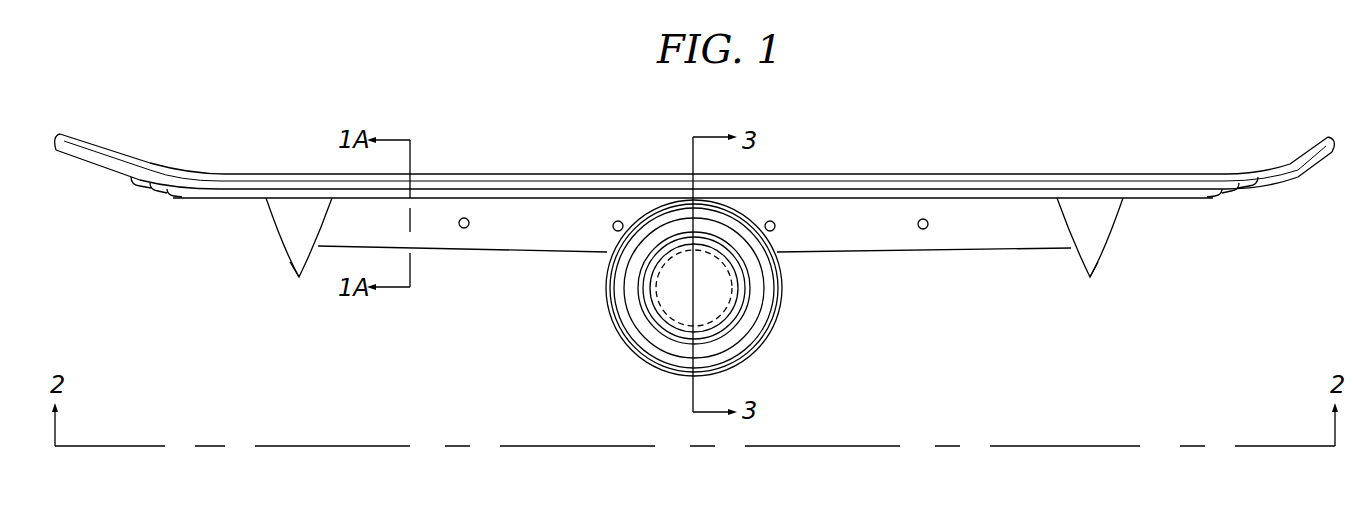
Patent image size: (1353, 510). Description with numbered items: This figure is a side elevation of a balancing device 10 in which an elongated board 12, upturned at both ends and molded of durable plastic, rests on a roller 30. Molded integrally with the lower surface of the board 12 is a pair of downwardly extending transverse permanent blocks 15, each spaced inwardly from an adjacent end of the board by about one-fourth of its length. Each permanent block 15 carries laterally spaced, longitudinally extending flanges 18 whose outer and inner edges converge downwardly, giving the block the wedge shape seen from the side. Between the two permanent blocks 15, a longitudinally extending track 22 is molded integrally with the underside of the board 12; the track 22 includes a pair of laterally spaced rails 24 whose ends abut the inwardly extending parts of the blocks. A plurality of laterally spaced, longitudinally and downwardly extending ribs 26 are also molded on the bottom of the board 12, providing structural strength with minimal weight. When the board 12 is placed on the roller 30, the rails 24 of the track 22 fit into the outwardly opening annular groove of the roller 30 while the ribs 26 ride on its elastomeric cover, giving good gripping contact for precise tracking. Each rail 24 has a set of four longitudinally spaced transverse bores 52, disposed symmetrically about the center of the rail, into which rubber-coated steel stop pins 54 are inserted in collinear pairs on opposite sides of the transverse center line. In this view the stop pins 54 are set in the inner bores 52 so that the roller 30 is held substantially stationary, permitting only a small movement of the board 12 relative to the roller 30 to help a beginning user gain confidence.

The balancing device 10 is at (1080, 103).
The board 12 is at (548, 173).
The permanent block 15 is at (275, 248).
The flange 18 is at (295, 253).
The track 22 is at (883, 253).
The rail 24 is at (462, 252).
The rib 26 is at (562, 199).
The roller 30 is at (792, 318).
The transverse bore 52 is at (466, 219).
The stop pin 54 is at (614, 229).